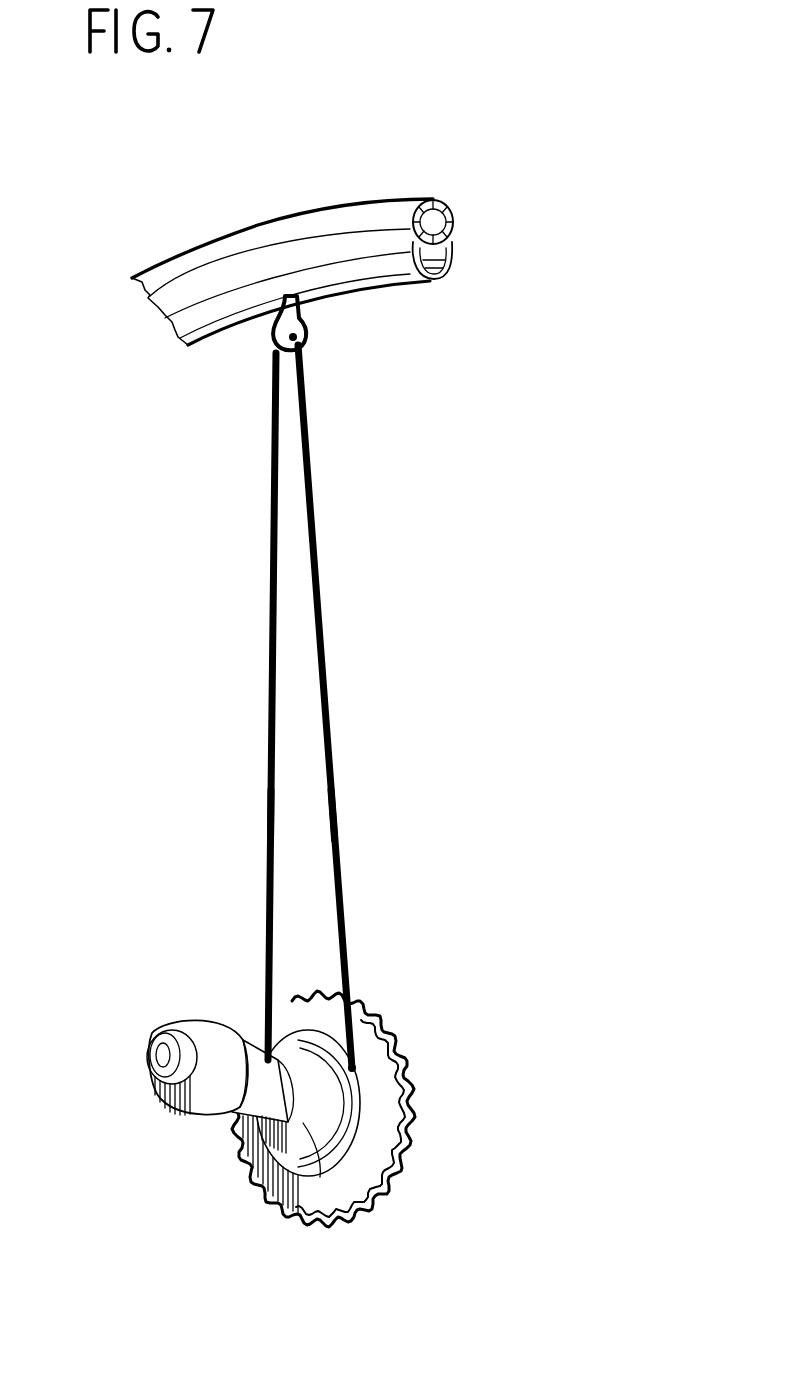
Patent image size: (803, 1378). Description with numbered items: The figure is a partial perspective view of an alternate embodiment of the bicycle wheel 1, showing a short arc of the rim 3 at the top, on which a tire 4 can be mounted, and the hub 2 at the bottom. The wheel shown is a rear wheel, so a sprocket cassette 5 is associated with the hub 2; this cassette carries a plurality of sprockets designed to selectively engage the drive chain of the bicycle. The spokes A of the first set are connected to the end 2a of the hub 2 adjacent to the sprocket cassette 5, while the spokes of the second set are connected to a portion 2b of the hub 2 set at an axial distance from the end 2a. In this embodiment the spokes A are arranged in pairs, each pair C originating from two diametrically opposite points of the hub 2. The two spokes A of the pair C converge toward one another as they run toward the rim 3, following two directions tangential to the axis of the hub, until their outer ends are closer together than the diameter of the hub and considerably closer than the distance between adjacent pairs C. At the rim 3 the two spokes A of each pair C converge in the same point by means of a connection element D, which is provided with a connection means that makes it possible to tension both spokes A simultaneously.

The bicycle wheel 1 is at (243, 258).
The hub 2 is at (157, 1122).
The end of the hub 2a is at (313, 1215).
The portion of the hub 2b is at (152, 1098).
The rim 3 is at (391, 288).
The tire 4 is at (390, 215).
The sprocket cassette 5 is at (422, 1085).
The spokes of the first set A is at (330, 815).
The pair of spokes C is at (348, 687).
The connection element D is at (268, 334).